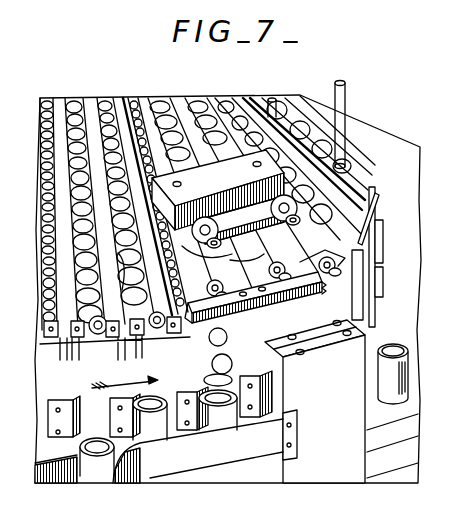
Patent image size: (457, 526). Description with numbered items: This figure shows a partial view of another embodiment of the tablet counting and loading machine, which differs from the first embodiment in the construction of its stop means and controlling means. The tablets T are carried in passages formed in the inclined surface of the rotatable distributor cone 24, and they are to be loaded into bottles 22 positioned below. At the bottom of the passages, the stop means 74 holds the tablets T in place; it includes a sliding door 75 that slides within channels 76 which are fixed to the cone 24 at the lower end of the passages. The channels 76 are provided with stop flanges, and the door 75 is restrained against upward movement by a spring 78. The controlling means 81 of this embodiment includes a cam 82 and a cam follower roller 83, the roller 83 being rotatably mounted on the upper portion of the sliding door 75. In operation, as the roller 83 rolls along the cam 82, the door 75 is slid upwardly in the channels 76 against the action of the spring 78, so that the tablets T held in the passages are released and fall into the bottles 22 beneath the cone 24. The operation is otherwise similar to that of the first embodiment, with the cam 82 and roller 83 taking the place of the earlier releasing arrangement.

The rotatable distributor cone 24 is at (160, 93).
The cam follower roller 83 is at (272, 269).
The cam 82 is at (256, 294).
The controlling means 81 is at (354, 352).
The bottle 22 is at (392, 386).
The channels 76 is at (70, 345).
The stop means 74 is at (110, 347).
The spring 78 is at (115, 342).
The sliding door 75 is at (173, 336).
The tablets T is at (40, 220).